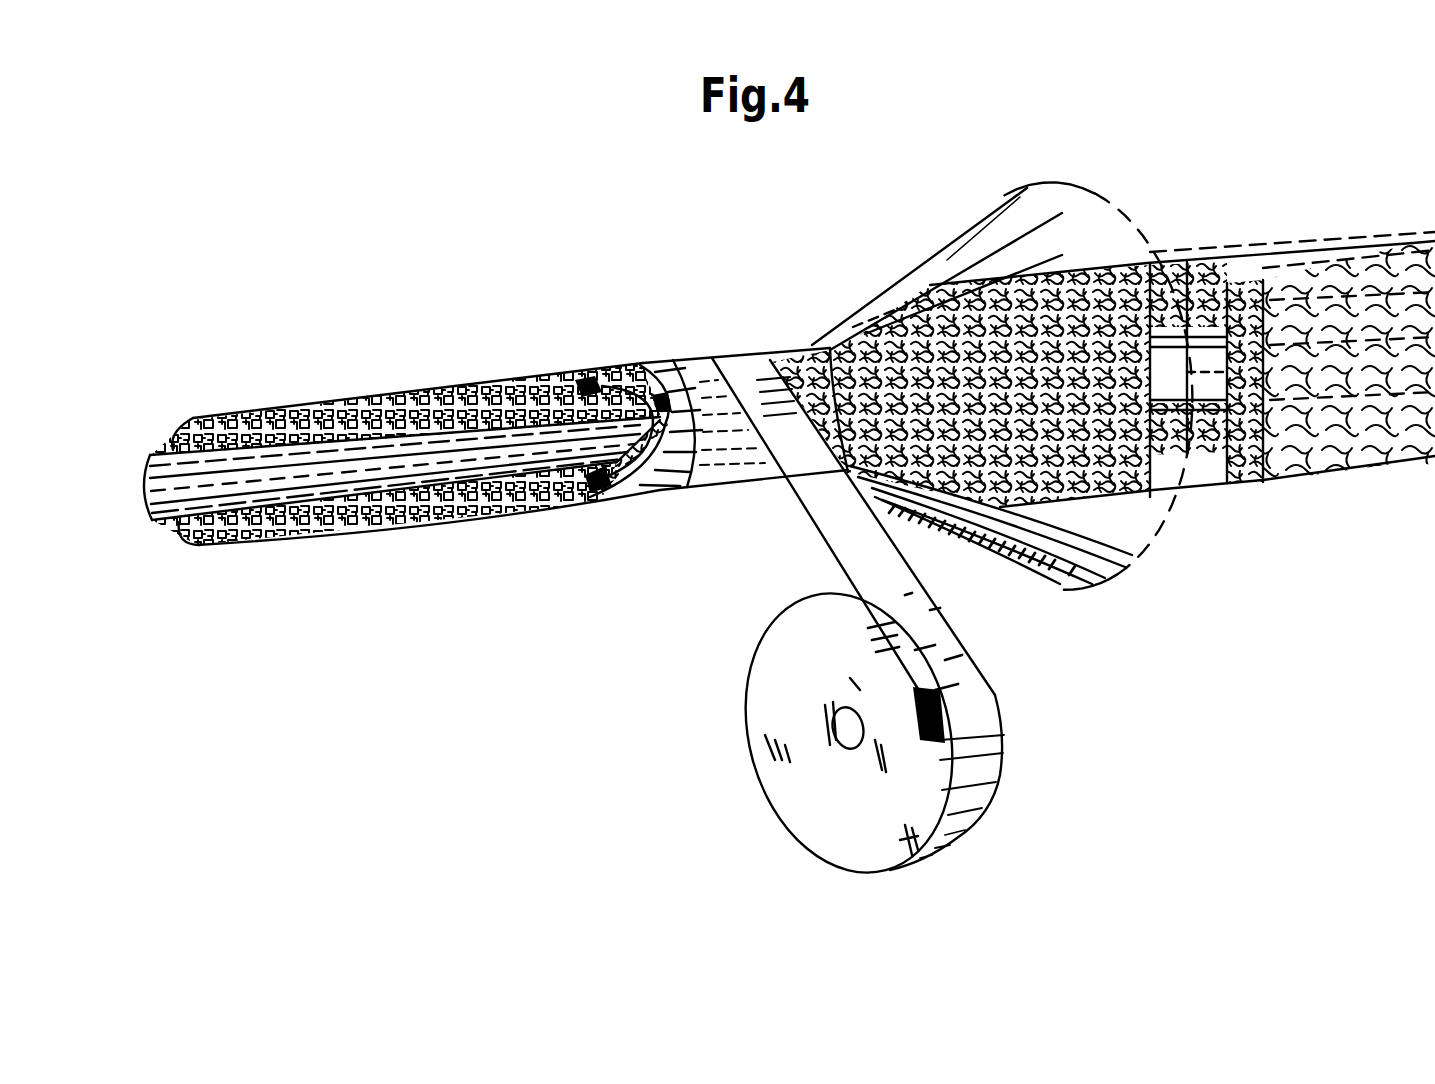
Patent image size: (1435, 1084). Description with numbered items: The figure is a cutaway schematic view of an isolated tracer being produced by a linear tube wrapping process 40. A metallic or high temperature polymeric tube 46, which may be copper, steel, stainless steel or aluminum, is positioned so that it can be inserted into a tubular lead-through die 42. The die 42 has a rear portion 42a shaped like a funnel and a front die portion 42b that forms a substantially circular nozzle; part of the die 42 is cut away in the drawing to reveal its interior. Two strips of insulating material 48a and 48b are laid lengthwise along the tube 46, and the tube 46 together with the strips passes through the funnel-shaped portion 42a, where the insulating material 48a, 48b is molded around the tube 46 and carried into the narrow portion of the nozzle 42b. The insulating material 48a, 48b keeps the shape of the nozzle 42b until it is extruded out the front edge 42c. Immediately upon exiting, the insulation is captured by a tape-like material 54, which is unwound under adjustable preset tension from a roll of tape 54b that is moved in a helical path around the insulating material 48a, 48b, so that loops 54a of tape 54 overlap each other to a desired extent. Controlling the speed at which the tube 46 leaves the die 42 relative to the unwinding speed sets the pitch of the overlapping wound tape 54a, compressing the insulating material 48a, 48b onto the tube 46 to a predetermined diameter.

The linear tube wrapping process 40 is at (551, 199).
The tubular lead-through die 42 is at (878, 290).
The rear portion of the die 42a is at (992, 210).
The front die portion 42b is at (775, 355).
The front edge of the nozzle 42c is at (764, 352).
The tube 46 is at (397, 430).
The insulating material 48a is at (1288, 248).
The insulating material 48b is at (1330, 247).
The tape-like material 54 is at (817, 523).
The loops of tape 54a is at (675, 360).
The roll of tape 54b is at (1000, 740).